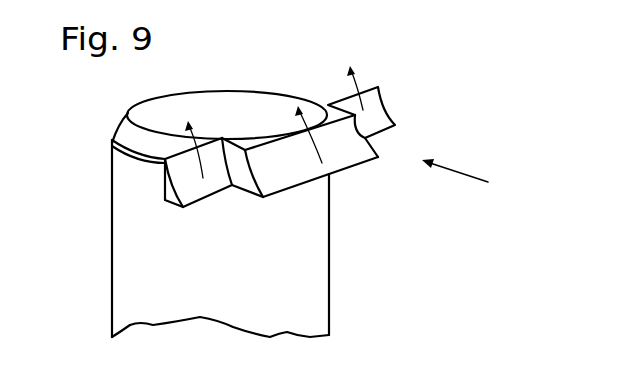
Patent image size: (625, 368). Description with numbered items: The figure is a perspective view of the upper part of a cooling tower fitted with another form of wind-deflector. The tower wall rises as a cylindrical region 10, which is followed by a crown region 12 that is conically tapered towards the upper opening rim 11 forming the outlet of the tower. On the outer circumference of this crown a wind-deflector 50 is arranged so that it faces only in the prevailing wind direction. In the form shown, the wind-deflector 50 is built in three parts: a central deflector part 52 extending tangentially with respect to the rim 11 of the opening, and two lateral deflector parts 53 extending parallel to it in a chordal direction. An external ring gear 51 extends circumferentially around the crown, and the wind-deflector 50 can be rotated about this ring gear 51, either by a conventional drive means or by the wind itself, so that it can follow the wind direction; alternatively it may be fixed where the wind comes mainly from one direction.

The cylindrical region 10 is at (112, 273).
The upper opening rim 11 is at (235, 98).
The crown region 12 is at (123, 118).
The wind-deflector 50 is at (250, 180).
The external ring gear 51 is at (132, 152).
The central deflector part 52 is at (347, 162).
The lateral deflector parts 53 is at (195, 196).